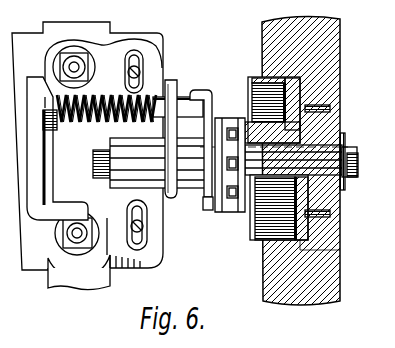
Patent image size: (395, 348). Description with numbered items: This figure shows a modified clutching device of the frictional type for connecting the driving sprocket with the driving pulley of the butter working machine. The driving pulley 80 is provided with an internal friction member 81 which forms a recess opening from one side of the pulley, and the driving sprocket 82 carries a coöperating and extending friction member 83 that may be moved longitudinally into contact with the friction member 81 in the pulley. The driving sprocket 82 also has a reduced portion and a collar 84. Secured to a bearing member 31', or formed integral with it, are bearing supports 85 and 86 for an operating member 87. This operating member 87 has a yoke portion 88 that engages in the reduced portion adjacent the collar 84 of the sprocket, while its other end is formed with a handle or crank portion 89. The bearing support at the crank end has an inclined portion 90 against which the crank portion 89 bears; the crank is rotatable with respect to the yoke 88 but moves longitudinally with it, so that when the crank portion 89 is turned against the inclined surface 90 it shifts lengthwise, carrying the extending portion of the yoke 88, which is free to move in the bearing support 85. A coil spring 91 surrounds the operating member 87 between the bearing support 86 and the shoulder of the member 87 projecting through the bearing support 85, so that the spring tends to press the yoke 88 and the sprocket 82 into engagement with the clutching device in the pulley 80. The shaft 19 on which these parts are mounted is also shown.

The shaft 19 is at (330, 157).
The bearing member 31' is at (93, 283).
The driving pulley 80 is at (302, 296).
The internal friction member 81 is at (340, 252).
The driving sprocket 82 is at (216, 118).
The extending friction member 83 is at (252, 98).
The collar 84 is at (207, 198).
The bearing support 85 is at (167, 80).
The bearing support 86 is at (50, 131).
The operating member 87 is at (190, 97).
The yoke portion 88 is at (210, 210).
The crank portion 89 is at (27, 212).
The inclined portion 90 is at (47, 108).
The coil spring 91 is at (101, 95).